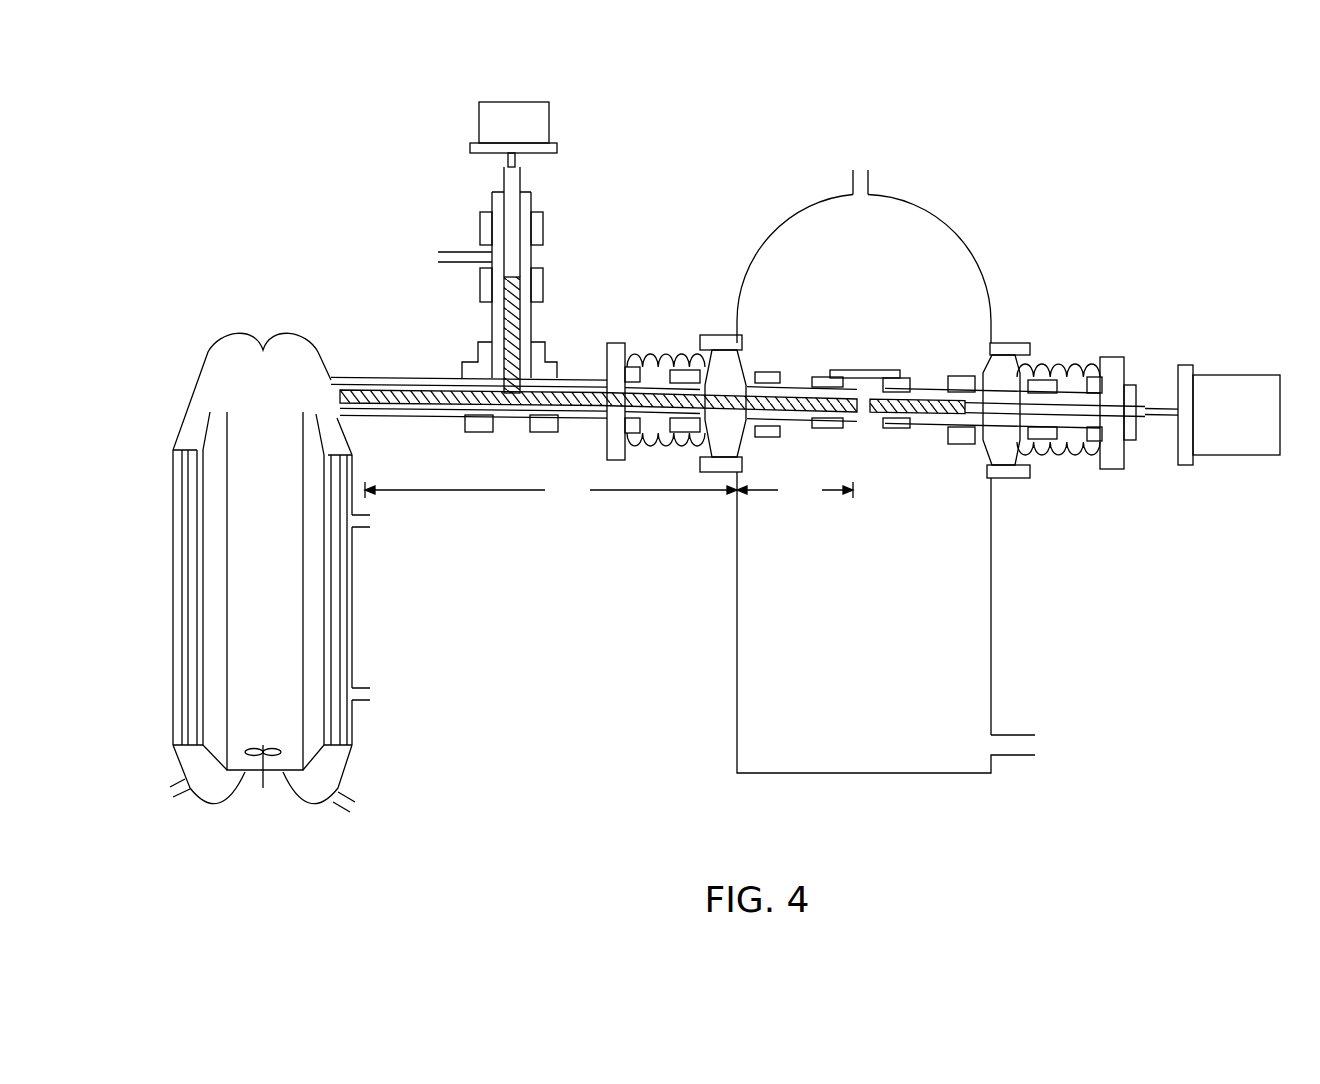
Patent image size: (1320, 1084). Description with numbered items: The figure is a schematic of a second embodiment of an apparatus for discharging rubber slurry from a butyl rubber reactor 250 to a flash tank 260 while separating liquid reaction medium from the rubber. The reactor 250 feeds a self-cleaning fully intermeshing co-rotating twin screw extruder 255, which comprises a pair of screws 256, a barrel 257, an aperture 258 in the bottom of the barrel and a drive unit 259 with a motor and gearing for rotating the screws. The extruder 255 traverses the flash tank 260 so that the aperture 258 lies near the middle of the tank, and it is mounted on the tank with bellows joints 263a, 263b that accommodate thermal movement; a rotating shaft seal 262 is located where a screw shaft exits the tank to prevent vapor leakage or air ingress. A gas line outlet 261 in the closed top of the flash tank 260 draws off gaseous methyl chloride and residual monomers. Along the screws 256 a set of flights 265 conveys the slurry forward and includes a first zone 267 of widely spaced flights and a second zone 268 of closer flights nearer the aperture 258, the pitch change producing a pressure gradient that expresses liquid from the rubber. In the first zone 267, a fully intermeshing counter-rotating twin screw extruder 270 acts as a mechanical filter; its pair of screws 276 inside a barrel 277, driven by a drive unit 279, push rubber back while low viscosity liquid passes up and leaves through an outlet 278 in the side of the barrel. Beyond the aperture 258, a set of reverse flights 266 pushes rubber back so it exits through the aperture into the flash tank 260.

The butyl rubber reactor 250 is at (270, 572).
The self-cleaning fully intermeshing co-rotating twin screw extruder 255 is at (387, 368).
The pair of screws 256 is at (388, 393).
The barrel 257 is at (437, 418).
The aperture 258 is at (860, 417).
The drive unit 259 is at (1229, 415).
The flash tank 260 is at (900, 446).
The gas line outlet 261 is at (862, 170).
The rotating shaft seal 262 is at (1130, 396).
The bellows joint 263a is at (648, 350).
The bellows joint 263b is at (1068, 380).
The set of flights 265 is at (602, 409).
The set of reverse flights 266 is at (884, 396).
The first zone 267 is at (551, 491).
The second zone 268 is at (795, 492).
The fully intermeshing counter-rotating twin screw extruder 270 is at (452, 286).
The pair of screws 276 is at (511, 324).
The barrel 277 is at (491, 336).
The outlet 278 is at (458, 256).
The drive unit 279 is at (513, 127).